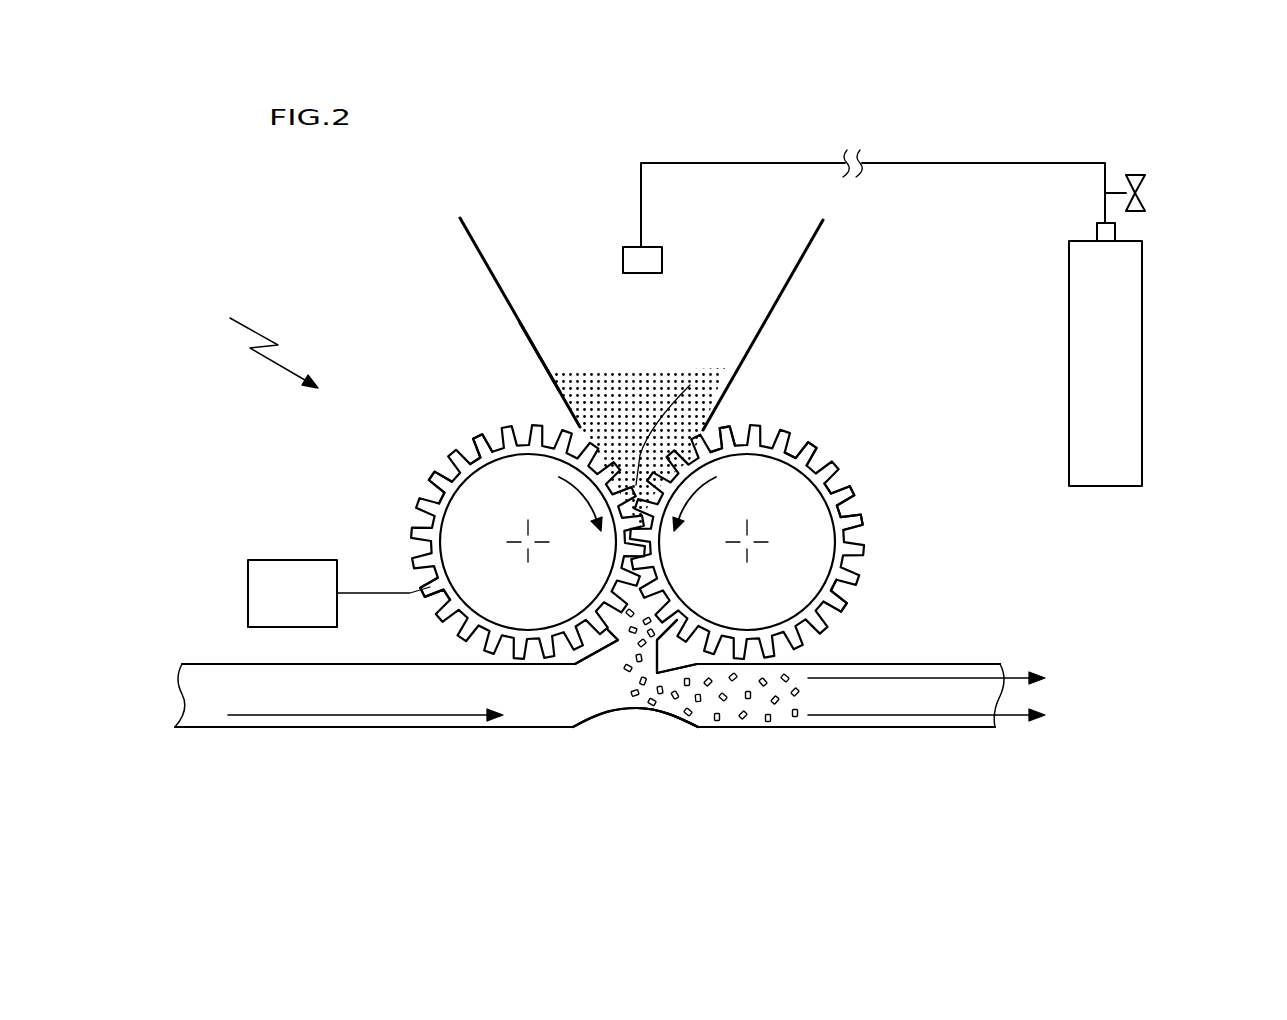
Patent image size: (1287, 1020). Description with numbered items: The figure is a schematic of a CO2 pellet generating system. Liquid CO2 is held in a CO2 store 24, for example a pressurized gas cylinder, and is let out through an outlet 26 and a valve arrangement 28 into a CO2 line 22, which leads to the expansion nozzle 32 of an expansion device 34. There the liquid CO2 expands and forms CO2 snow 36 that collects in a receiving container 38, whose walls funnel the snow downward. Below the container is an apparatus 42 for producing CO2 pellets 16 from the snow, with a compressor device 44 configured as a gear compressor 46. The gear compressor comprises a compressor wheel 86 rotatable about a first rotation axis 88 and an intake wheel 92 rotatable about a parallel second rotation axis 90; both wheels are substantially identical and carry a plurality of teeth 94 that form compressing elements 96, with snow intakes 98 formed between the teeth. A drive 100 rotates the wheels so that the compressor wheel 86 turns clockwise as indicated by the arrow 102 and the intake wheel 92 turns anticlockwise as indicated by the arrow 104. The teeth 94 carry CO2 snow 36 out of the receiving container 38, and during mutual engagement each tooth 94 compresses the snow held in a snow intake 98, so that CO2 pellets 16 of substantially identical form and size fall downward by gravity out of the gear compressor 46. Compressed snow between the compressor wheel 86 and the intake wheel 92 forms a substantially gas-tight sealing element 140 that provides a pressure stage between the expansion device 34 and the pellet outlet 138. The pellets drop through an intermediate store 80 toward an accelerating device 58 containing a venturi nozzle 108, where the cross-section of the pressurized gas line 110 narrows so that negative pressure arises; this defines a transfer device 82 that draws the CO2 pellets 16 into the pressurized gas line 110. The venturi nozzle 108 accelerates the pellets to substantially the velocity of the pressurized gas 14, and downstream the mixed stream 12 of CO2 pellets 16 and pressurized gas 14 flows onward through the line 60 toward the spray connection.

The mixed stream 12 is at (1027, 697).
The pressurized gas 14 is at (277, 698).
The CO2 pellets 16 is at (633, 655).
The CO2 line 22 is at (922, 164).
The CO2 store 24 is at (1123, 312).
The outlet 26 is at (1115, 232).
The valve arrangement 28 is at (1145, 185).
The expansion nozzle 32 is at (655, 262).
The expansion device 34 is at (578, 283).
The CO2 snow 36 is at (611, 410).
The receiving container 38 is at (536, 325).
The apparatus for producing CO2 pellets 42 is at (257, 344).
The compressor device 44 is at (799, 434).
The gear compressor 46 is at (858, 473).
The accelerating device 58 is at (670, 722).
The line 60 is at (900, 728).
The intermediate store 80 is at (612, 640).
The transfer device 82 is at (665, 666).
The compressor wheel 86 is at (428, 500).
The first rotation axis 88 is at (522, 546).
The second rotation axis 90 is at (752, 545).
The intake wheel 92 is at (855, 540).
The teeth 94 is at (431, 603).
The compressing elements 96 is at (472, 430).
The snow intakes 98 is at (433, 466).
The drive 100 is at (275, 607).
The arrow 102 is at (580, 493).
The arrow 104 is at (700, 492).
The venturi nozzle 108 is at (652, 722).
The pressurized gas line 110 is at (435, 717).
The pellet outlet 138 is at (630, 600).
The sealing element 140 is at (690, 385).